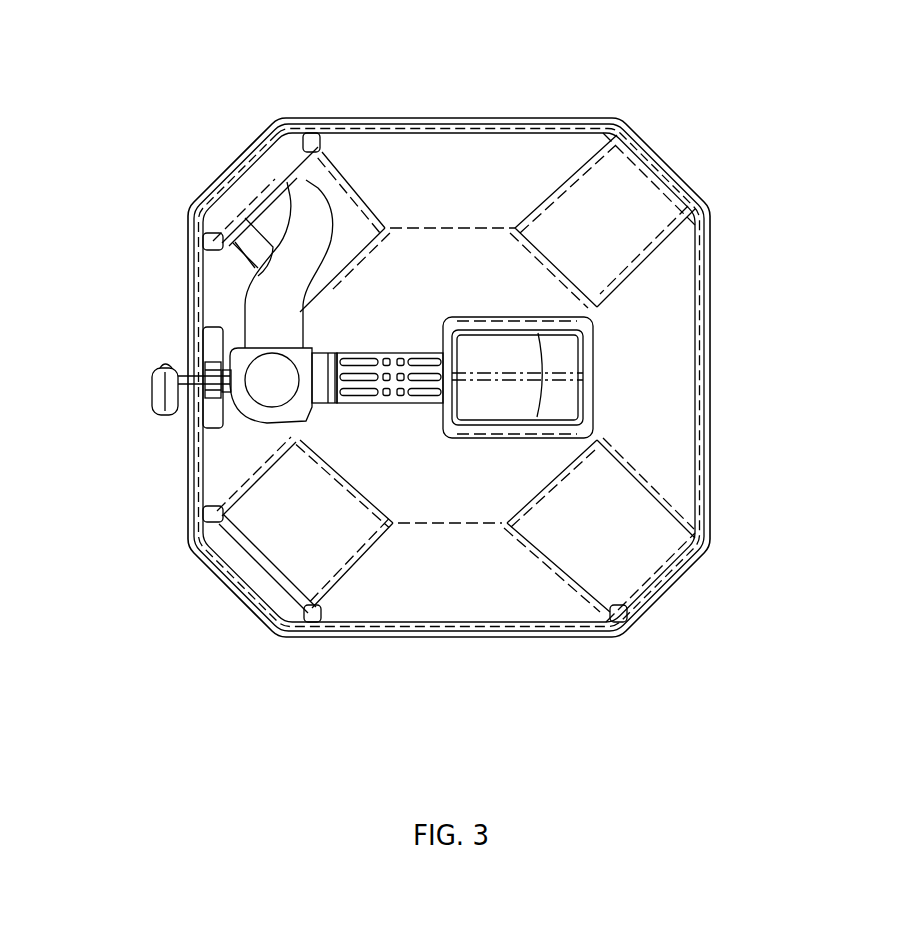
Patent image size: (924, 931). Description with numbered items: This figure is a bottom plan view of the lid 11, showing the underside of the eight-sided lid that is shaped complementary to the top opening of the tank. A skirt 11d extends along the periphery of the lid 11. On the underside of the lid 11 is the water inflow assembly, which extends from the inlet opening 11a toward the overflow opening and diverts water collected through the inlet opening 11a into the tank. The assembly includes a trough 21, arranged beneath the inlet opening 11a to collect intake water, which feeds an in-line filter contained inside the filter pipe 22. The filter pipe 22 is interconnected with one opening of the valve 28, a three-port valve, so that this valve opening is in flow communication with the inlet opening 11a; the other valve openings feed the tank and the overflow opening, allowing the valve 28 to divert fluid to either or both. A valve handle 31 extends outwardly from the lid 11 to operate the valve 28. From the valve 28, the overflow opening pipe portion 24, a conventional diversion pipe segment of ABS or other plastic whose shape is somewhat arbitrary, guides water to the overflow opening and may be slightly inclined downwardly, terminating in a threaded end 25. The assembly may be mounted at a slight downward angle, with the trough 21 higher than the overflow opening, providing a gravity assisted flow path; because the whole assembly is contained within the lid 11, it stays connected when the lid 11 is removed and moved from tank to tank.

The lid 11 is at (677, 170).
The skirt 11d is at (698, 262).
The inlet opening 11a is at (590, 375).
The trough 21 is at (563, 398).
The filter pipe 22 is at (363, 402).
The overflow opening pipe portion 24 is at (327, 212).
The threaded end 25 is at (287, 178).
The valve 28 is at (272, 380).
The valve handle 31 is at (156, 421).